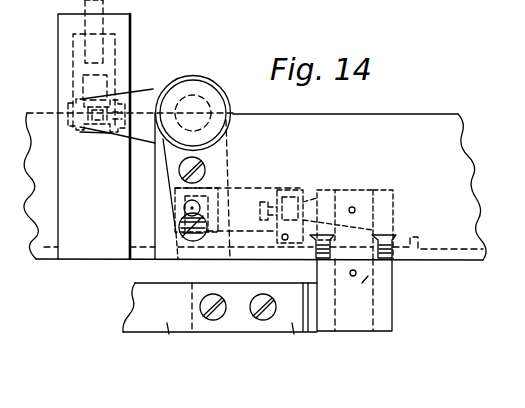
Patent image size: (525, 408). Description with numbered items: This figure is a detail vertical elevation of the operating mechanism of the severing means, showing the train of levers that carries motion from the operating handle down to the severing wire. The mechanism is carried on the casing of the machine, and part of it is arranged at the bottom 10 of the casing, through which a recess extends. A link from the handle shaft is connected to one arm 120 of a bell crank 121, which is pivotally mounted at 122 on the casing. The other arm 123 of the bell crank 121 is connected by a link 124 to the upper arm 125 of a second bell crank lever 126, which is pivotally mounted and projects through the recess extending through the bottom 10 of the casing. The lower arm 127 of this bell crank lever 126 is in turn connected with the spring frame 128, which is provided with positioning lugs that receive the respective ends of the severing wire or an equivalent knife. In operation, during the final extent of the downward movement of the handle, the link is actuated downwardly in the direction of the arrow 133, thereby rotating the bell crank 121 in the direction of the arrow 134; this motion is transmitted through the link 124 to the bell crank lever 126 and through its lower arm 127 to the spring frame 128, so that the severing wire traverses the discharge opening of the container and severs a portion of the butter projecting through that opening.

The bottom of the casing 10 is at (420, 253).
The arm of the bell crank 120 is at (83, 100).
The bell crank 121 is at (153, 89).
The pivot of the bell crank 122 is at (100, 12).
The other arm of the bell crank lever 123 is at (210, 181).
The link 124 is at (268, 188).
The upper arm of the bell crank lever 125 is at (320, 196).
The bell crank lever 126 is at (360, 202).
The lower arm of the bell crank lever 127 is at (290, 323).
The spring frame 128 is at (165, 320).
The arrow indicating direction of link movement 133 is at (46, 33).
The arrow indicating direction of bell crank rotation 134 is at (116, 163).